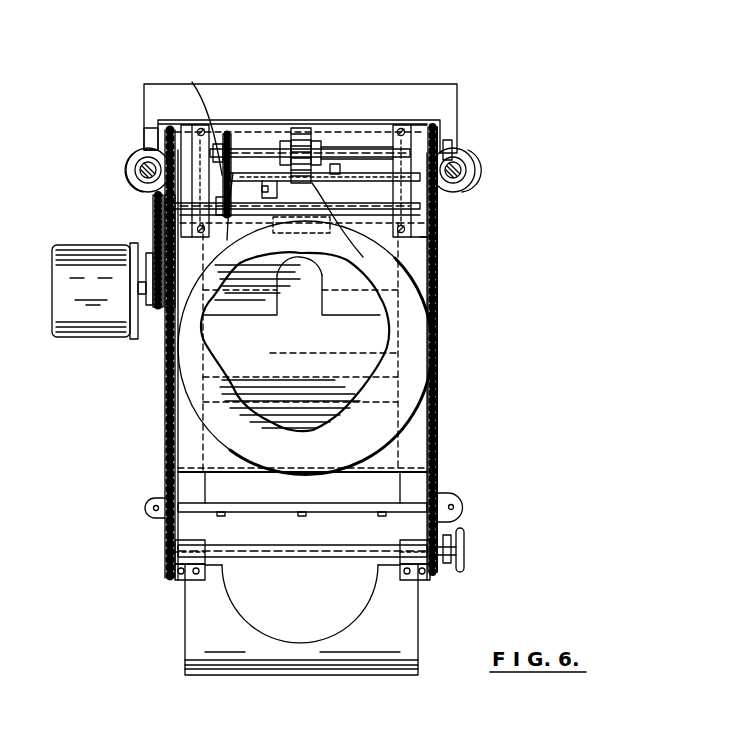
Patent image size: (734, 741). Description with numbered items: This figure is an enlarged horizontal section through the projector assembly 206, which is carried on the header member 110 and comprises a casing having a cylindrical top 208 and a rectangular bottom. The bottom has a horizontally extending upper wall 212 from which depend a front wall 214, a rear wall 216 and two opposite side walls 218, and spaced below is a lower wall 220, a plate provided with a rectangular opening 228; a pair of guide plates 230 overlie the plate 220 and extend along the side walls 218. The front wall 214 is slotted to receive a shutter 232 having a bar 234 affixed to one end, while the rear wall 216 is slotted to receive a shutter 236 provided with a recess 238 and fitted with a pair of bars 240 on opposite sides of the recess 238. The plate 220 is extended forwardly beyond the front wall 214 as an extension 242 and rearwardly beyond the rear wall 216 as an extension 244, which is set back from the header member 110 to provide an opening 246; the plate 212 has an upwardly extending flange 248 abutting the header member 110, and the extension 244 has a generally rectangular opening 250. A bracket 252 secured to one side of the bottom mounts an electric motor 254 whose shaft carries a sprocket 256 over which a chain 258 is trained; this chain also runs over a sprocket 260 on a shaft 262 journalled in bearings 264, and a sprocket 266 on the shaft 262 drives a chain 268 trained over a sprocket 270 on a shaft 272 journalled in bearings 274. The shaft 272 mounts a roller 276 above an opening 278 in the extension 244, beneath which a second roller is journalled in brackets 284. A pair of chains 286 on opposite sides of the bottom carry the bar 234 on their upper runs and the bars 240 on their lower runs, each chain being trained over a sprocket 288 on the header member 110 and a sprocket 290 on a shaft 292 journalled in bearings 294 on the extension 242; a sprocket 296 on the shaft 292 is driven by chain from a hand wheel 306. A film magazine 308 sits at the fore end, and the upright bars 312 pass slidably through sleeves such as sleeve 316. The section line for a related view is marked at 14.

The section line 14 is at (300, 368).
The header member 110 is at (430, 89).
The projector assembly 206 is at (522, 336).
The cylindrical top 208 is at (415, 372).
The upper wall 212 is at (422, 450).
The front wall 214 is at (380, 474).
The rear wall 216 is at (432, 233).
The side walls 218 is at (173, 412).
The lower wall 220 is at (277, 297).
The rectangular opening 228 is at (297, 283).
The guide plates 230 is at (207, 334).
The shutter 232 is at (245, 383).
The bar 234 is at (268, 507).
The shutter 236 is at (335, 309).
The recess 238 is at (300, 230).
The bars 240 is at (264, 176).
The extension 242 is at (275, 572).
The extension 244 is at (340, 145).
The opening 246 is at (316, 140).
The flange 248 is at (392, 126).
The rectangular opening 250 is at (228, 134).
The bracket 252 is at (157, 333).
The electric motor 254 is at (99, 291).
The sprocket 256 is at (157, 308).
The chain 258 is at (156, 247).
The sprocket 260 is at (140, 178).
The shaft 262 is at (356, 222).
The bearings 264 is at (193, 238).
The sprocket 266 is at (224, 218).
The chain 268 is at (193, 165).
The sprocket 270 is at (197, 120).
The shaft 272 is at (245, 149).
The bearings 274 is at (153, 140).
The roller 276 is at (302, 128).
The opening 278 is at (325, 222).
The brackets 284 is at (343, 190).
The chains 286 is at (163, 470).
The sprocket 288 is at (156, 123).
The sprocket 290 is at (168, 564).
The shaft 292 is at (347, 560).
The bearings 294 is at (418, 578).
The sprocket 296 is at (452, 553).
The hand wheel 306 is at (464, 537).
The film magazine 308 is at (405, 658).
The upright bars 312 is at (141, 166).
The sleeve 316 is at (137, 188).